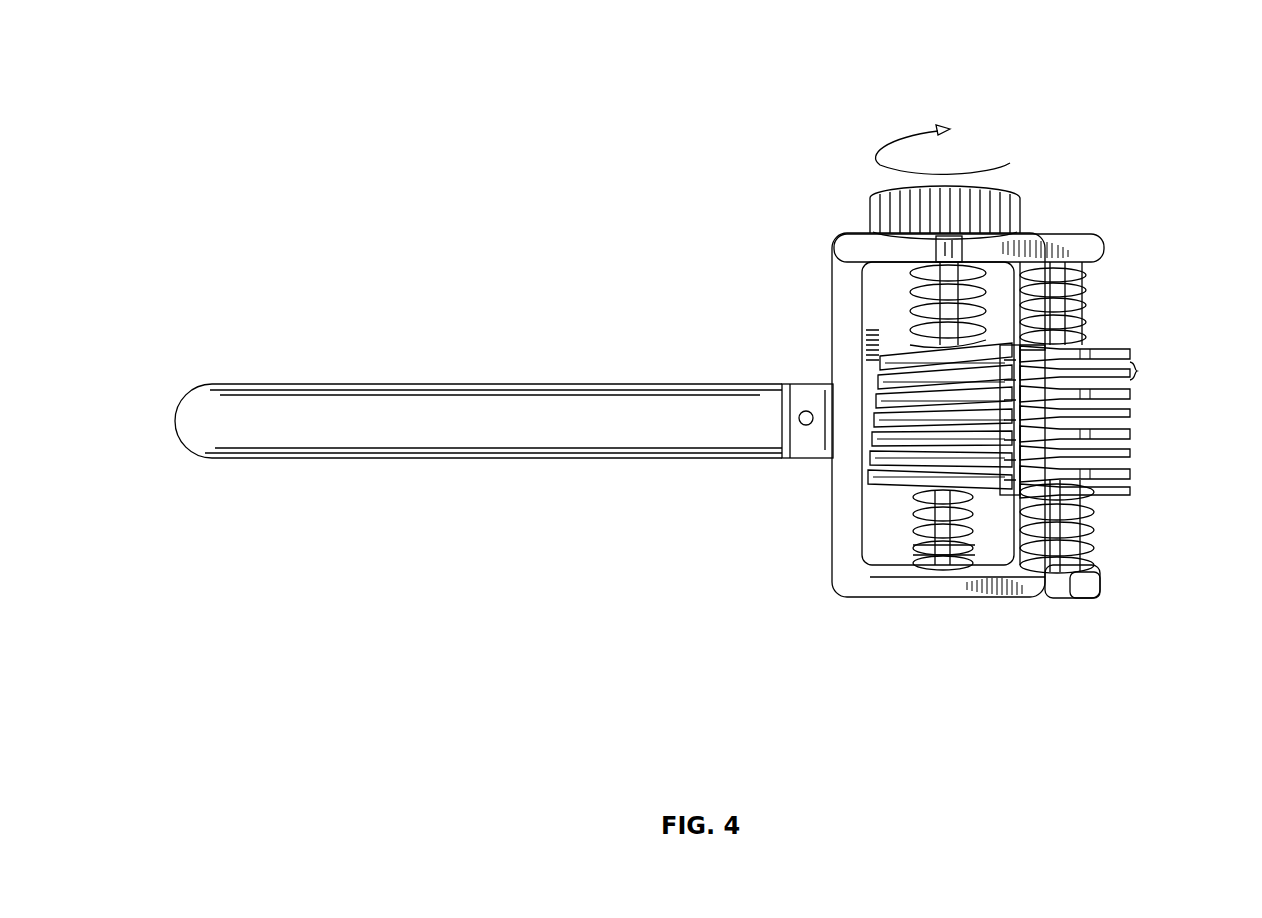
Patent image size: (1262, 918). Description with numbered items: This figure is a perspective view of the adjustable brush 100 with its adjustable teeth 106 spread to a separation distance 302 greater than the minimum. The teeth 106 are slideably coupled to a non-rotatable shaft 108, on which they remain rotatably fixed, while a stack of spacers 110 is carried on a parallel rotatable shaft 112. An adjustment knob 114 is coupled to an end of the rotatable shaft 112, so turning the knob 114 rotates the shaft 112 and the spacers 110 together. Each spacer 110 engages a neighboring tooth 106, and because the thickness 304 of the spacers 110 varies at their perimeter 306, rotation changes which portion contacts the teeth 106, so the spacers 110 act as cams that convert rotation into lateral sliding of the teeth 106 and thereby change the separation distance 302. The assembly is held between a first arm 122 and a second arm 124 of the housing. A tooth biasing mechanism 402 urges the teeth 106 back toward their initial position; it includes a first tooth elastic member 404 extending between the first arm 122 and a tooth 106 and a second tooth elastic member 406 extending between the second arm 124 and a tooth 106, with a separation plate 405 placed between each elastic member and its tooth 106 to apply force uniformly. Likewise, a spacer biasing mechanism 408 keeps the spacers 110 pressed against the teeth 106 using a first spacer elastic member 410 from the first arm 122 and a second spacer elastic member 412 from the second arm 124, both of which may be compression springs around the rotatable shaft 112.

The adjustable brush 100 is at (212, 78).
The adjustable teeth 106 is at (1150, 445).
The non-rotatable shaft 108 is at (1063, 277).
The spacers 110 is at (868, 343).
The rotatable shaft 112 is at (915, 540).
The adjustment knob 114 is at (878, 188).
The first arm 122 is at (1103, 248).
The second arm 124 is at (988, 597).
The separation distance 302 is at (1137, 371).
The thickness 304 is at (868, 413).
The perimeter 306 is at (936, 346).
The tooth biasing mechanism 402 is at (1143, 584).
The first tooth elastic member 404 is at (1080, 306).
The separation plate 405 is at (1103, 347).
The second tooth elastic member 406 is at (1085, 530).
The spacer biasing mechanism 408 is at (874, 521).
The first spacer elastic member 410 is at (930, 297).
The second spacer elastic member 412 is at (920, 492).